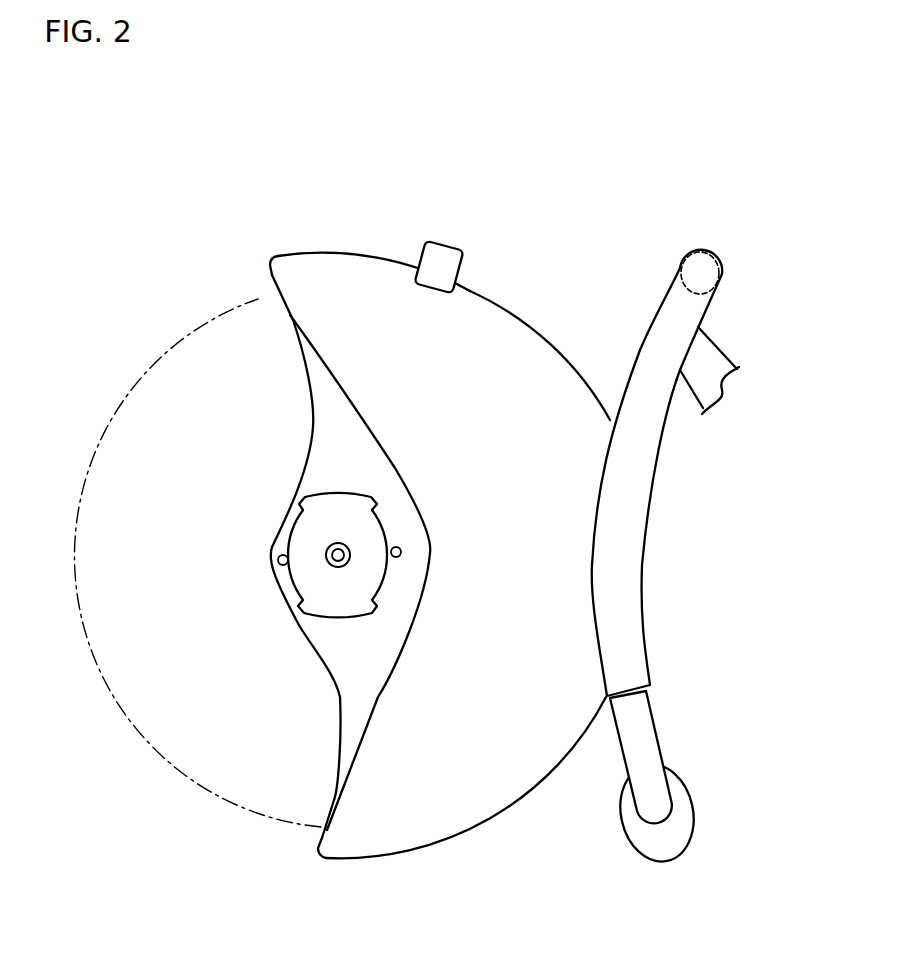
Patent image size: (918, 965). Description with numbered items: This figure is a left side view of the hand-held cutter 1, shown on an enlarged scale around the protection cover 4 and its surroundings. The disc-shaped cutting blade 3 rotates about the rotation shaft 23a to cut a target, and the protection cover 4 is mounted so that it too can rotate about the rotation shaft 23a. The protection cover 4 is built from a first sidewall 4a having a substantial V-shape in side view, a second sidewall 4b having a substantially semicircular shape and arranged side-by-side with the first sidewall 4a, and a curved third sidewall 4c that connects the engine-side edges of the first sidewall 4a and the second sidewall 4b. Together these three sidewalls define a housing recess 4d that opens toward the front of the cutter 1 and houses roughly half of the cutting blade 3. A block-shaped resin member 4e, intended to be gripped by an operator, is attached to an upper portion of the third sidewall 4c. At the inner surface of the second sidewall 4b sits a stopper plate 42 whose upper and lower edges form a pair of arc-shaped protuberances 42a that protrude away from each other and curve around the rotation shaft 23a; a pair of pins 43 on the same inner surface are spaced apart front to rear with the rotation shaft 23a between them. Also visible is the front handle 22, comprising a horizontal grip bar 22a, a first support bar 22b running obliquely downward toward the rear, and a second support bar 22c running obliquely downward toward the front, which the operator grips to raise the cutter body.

The hand-held cutter 1 is at (222, 165).
The cutting blade 3 is at (229, 806).
The protection cover 4 is at (353, 250).
The first sidewall 4a is at (485, 780).
The second sidewall 4b is at (353, 673).
The third sidewall 4c is at (550, 337).
The housing recess 4d is at (283, 296).
The resin member 4e is at (450, 243).
The front handle 22 is at (607, 197).
The grip bar 22a is at (683, 266).
The first support bar 22b is at (713, 348).
The second support bar 22c is at (663, 314).
The rotation shaft 23a is at (344, 560).
The stopper plate 42 is at (364, 486).
The arc-shaped protuberances 42a is at (323, 501).
The pins 43 is at (278, 560).